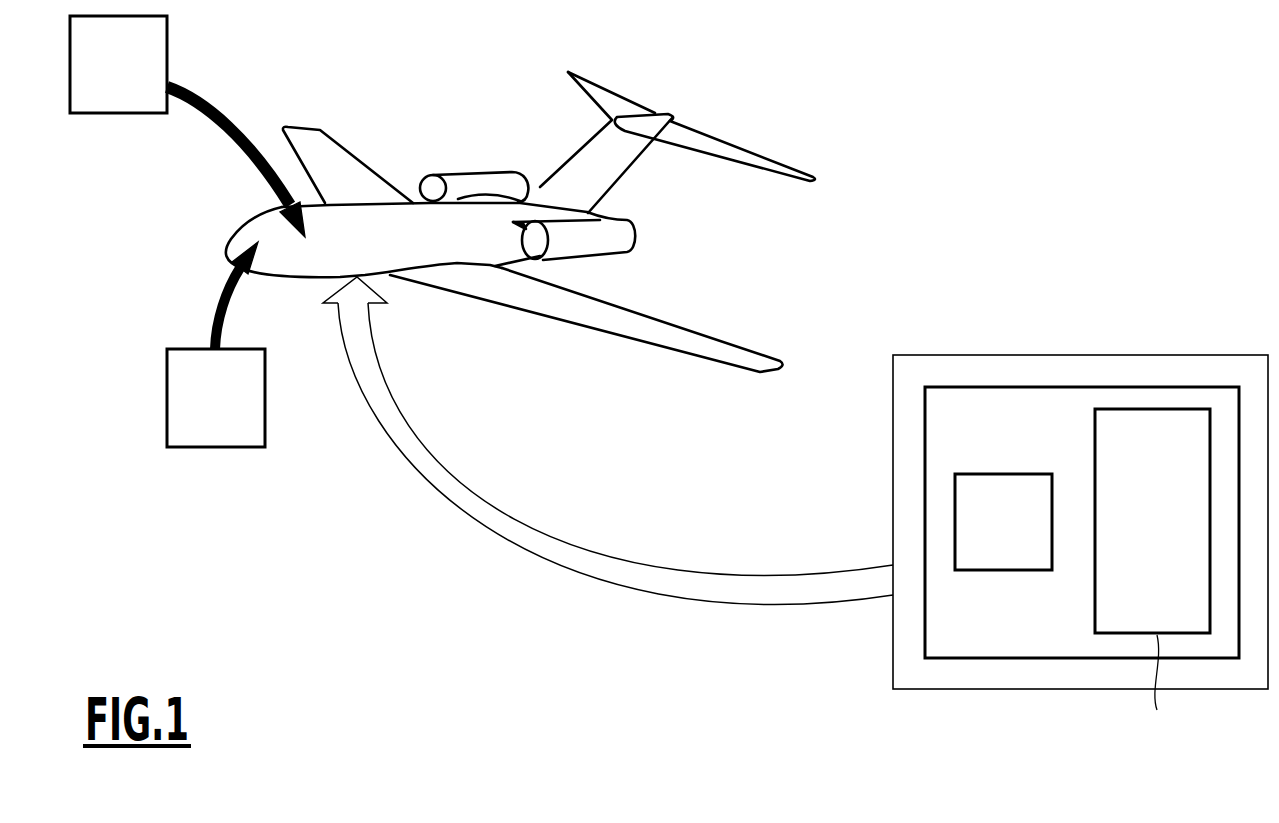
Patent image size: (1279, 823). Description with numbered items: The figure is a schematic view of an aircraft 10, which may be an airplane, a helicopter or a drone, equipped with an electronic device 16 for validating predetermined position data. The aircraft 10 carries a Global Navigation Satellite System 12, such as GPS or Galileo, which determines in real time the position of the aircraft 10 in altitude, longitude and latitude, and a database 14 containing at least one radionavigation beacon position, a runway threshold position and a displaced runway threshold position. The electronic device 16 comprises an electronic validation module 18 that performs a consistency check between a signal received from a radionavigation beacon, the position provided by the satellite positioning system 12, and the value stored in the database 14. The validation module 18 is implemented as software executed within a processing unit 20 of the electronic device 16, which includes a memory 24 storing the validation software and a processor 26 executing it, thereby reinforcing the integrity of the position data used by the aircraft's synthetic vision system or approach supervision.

The aircraft 10 is at (607, 100).
The Global Navigation Satellite System 12 is at (216, 344).
The database 14 is at (187, 126).
The electronic device 16 is at (1193, 353).
The electronic validation module 18 is at (1152, 521).
The processing unit 20 is at (1083, 659).
The memory 24 is at (1159, 689).
The processor 26 is at (1003, 522).